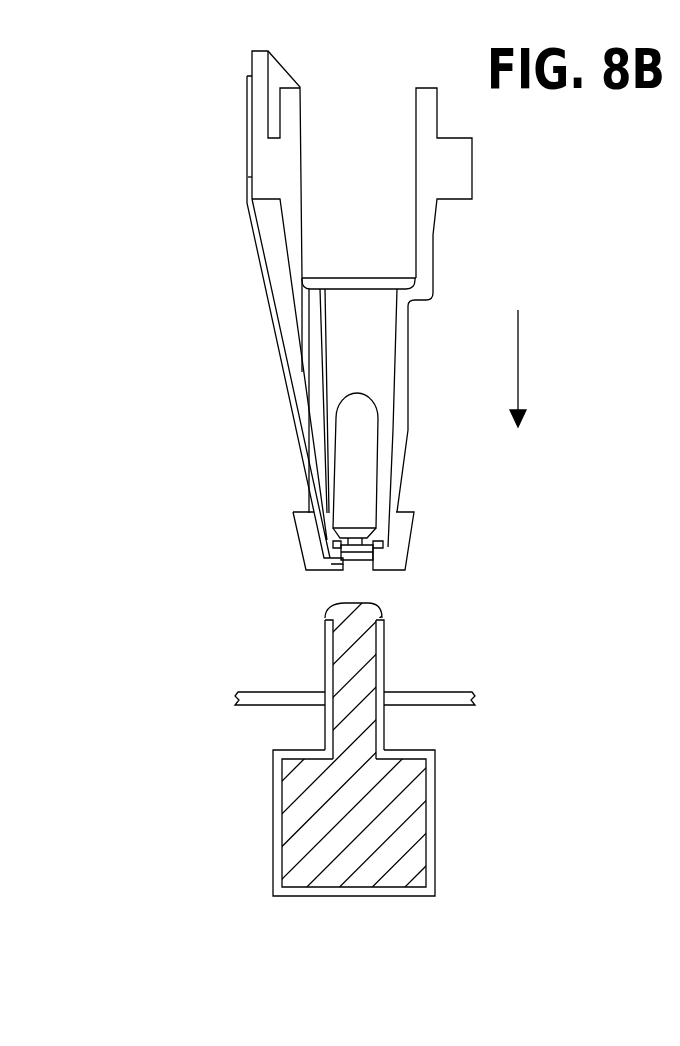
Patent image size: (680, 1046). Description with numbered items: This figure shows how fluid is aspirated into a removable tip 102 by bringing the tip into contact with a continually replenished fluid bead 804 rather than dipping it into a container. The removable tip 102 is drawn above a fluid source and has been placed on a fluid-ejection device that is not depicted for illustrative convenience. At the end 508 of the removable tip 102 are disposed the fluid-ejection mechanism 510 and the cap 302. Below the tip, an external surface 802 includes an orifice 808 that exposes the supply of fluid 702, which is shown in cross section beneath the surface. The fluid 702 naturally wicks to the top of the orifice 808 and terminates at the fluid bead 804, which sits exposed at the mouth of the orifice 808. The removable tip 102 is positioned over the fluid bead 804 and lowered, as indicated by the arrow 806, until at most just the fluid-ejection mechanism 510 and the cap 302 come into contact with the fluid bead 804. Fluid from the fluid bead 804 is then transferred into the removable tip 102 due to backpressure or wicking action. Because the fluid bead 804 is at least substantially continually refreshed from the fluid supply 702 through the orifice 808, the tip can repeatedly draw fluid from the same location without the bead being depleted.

The removable tip 102 is at (197, 407).
The cap 302 is at (310, 543).
The end 508 is at (380, 538).
The fluid-ejection mechanism 510 is at (357, 560).
The fluid bead 804 is at (347, 605).
The external surface 802 is at (265, 697).
The orifice 808 is at (380, 642).
The supply of fluid 702 is at (305, 820).
The arrow 806 is at (520, 360).